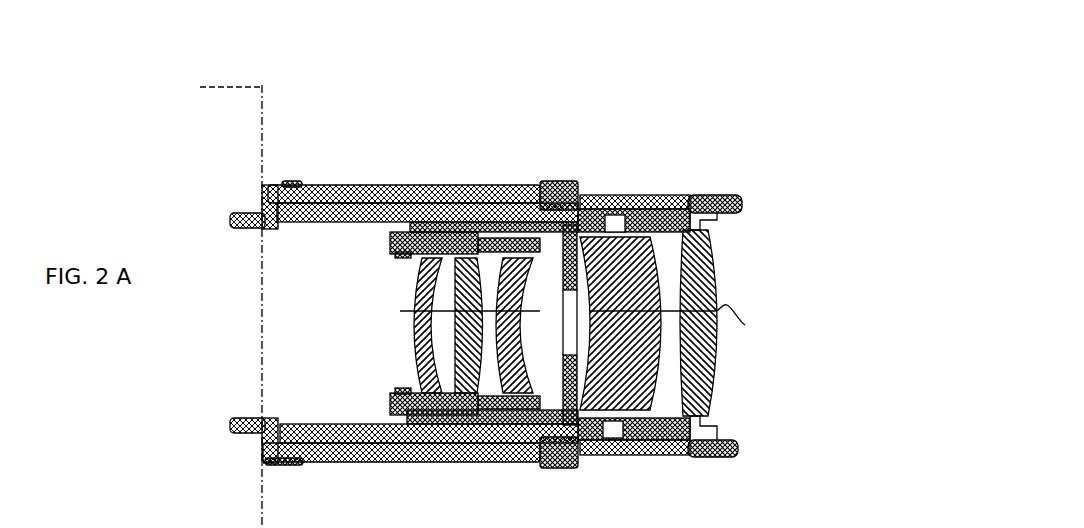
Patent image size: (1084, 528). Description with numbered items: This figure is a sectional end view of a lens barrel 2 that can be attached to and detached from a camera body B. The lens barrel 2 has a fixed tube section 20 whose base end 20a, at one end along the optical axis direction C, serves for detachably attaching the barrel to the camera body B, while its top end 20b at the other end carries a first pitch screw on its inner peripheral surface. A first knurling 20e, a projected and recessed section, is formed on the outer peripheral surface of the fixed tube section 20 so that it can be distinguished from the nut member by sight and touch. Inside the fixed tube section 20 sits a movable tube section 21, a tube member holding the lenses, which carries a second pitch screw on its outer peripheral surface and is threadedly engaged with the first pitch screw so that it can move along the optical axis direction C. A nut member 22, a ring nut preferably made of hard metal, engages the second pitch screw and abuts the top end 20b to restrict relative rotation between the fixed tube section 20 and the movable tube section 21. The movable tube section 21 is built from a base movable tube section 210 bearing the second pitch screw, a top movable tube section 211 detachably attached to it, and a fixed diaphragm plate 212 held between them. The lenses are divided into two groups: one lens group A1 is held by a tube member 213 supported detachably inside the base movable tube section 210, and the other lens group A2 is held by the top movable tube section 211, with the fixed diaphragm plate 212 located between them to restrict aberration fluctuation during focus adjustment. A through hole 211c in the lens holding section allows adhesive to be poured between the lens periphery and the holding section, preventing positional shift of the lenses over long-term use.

The lens barrel 2 is at (833, 188).
The fixed tube section 20 is at (404, 188).
The base end 20a is at (232, 214).
The top end 20b is at (537, 186).
The first knurling 20e is at (295, 184).
The movable tube section 21 is at (798, 72).
The nut member 22 is at (563, 190).
The base movable tube section 210 is at (670, 197).
The top movable tube section 211 is at (727, 197).
The through hole 211c is at (615, 200).
The fixed diaphragm plate 212 is at (598, 196).
The tube member 213 is at (408, 400).
The lens group A1 is at (400, 311).
The lens group A2 is at (745, 325).
The camera body B is at (265, 128).
The optical axis direction C is at (760, 328).